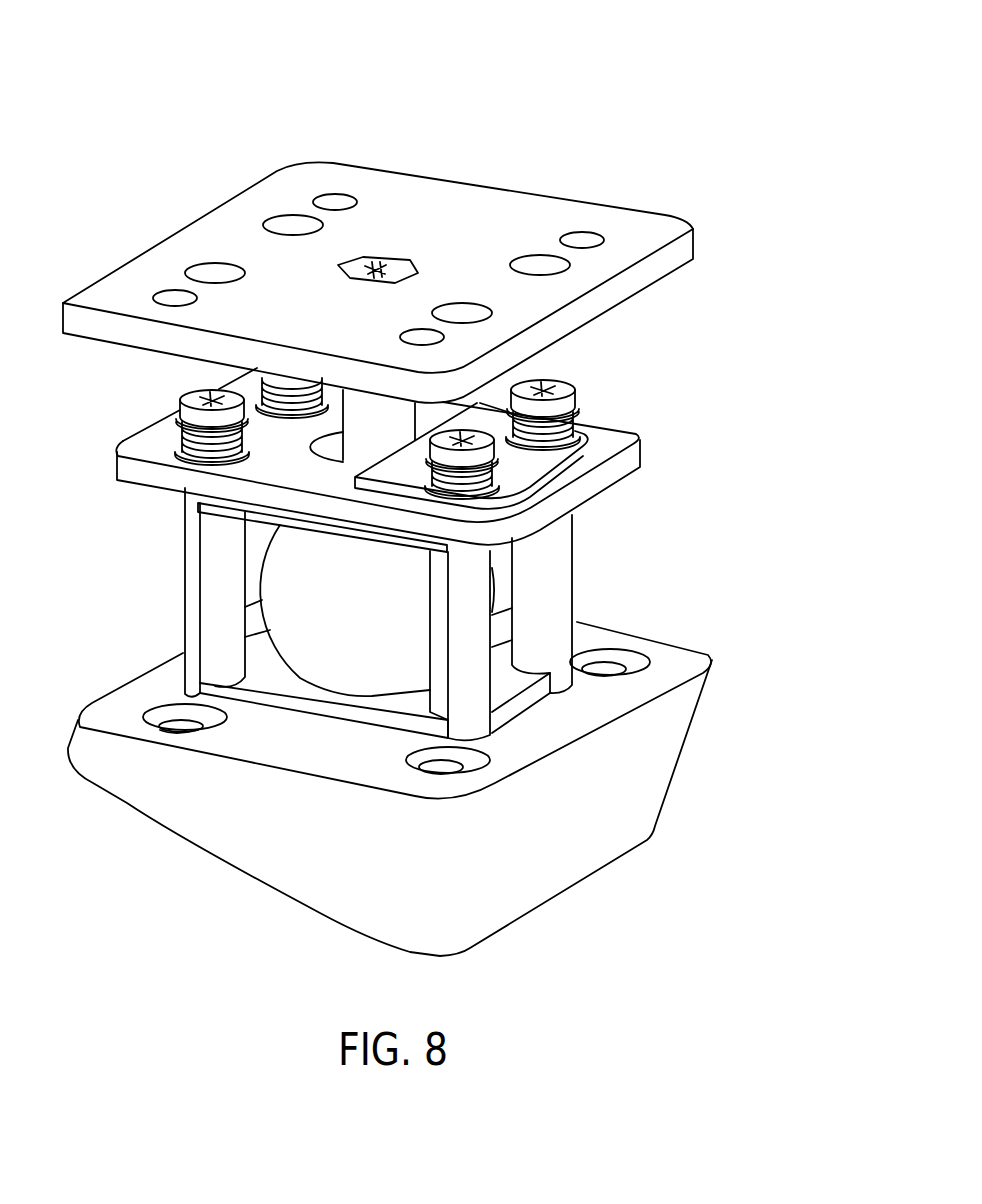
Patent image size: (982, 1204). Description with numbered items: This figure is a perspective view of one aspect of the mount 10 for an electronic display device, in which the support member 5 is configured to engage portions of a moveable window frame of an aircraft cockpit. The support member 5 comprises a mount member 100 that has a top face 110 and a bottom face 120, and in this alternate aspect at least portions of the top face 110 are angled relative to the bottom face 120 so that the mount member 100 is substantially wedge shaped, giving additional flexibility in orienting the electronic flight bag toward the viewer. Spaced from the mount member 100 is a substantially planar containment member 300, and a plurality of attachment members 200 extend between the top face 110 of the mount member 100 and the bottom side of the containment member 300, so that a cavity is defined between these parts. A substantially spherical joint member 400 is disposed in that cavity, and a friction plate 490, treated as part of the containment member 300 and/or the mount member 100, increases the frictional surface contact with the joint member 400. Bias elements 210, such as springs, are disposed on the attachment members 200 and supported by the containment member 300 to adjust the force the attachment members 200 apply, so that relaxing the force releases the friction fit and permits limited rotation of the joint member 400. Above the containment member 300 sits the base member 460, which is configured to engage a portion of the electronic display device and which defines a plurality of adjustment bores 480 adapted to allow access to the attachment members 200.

The mount 10 is at (588, 66).
The base member 460 is at (378, 282).
The adjustment bores 480 is at (532, 264).
The attachment members 200 is at (571, 382).
The bias elements 210 is at (577, 422).
The containment member 300 is at (412, 456).
The support member 5 is at (441, 614).
The friction plate 490 is at (290, 520).
The joint member 400 is at (356, 623).
The top face 110 is at (692, 654).
The mount member 100 is at (426, 775).
The bottom face 120 is at (253, 876).